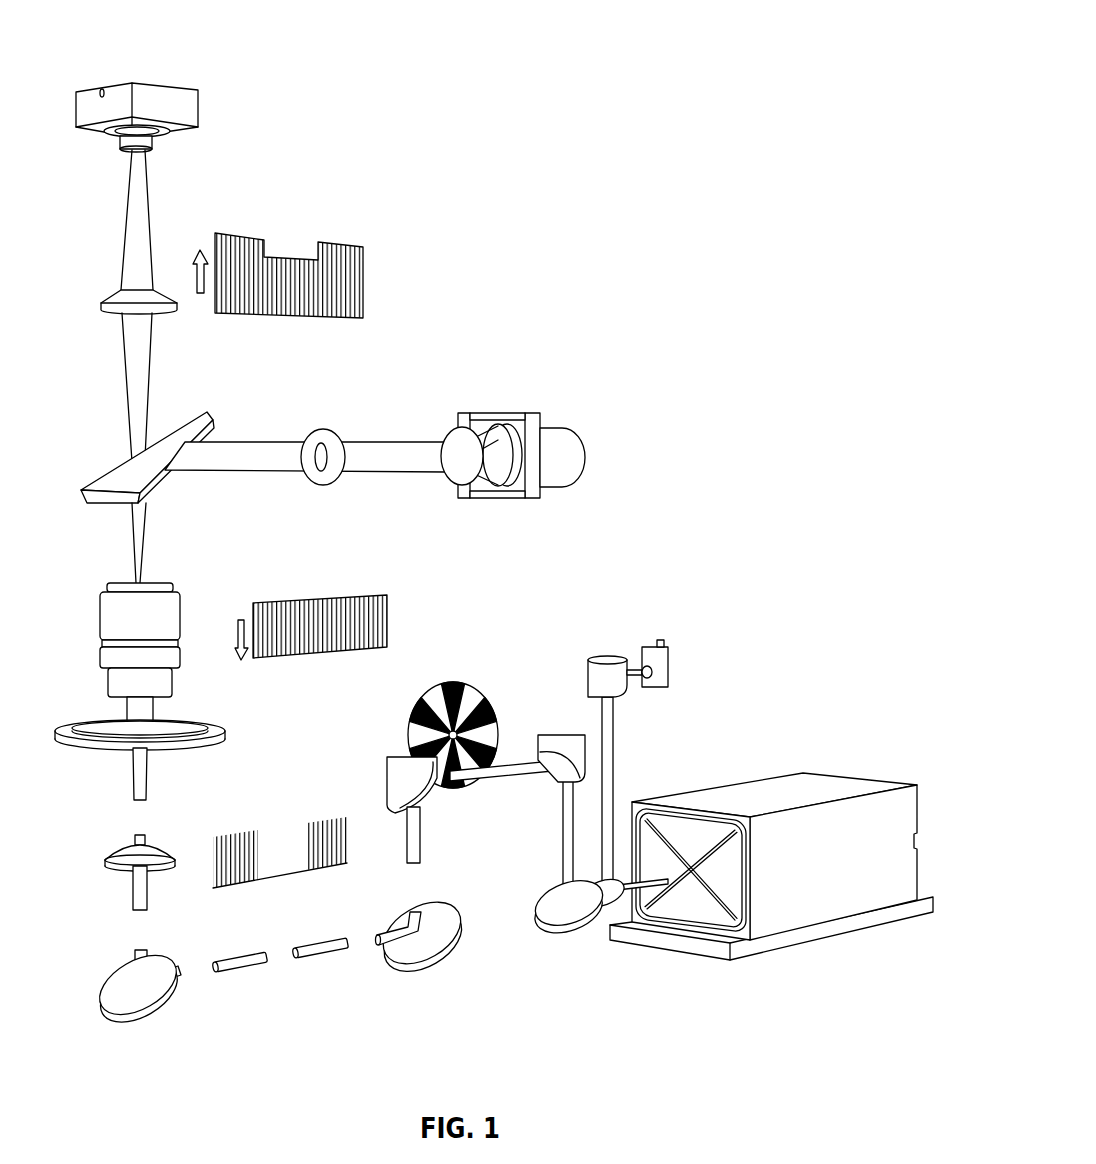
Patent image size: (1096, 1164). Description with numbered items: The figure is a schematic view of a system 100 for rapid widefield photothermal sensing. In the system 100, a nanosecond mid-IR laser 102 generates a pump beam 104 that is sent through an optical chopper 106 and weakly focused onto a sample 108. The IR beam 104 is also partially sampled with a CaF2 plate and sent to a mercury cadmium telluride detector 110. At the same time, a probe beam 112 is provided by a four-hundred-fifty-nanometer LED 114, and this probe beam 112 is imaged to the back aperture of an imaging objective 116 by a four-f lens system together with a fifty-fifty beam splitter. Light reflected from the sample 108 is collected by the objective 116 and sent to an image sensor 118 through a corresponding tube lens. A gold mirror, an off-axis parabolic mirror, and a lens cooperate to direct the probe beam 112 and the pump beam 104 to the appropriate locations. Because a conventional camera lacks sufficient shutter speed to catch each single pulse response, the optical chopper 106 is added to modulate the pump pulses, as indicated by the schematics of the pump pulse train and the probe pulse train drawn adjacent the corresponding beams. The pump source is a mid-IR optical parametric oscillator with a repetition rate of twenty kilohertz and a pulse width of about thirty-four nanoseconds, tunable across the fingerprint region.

The system 100 is at (748, 54).
The nanosecond mid-IR laser 102 is at (713, 960).
The beam 104 is at (245, 972).
The optical chopper 106 is at (410, 715).
The sample 108 is at (118, 737).
The mercury cadmium telluride (MCT) detector 110 is at (608, 656).
The probe beam 112 is at (401, 442).
The LED 114 is at (582, 447).
The imaging objective 116 is at (100, 595).
The image sensor 118 is at (199, 107).